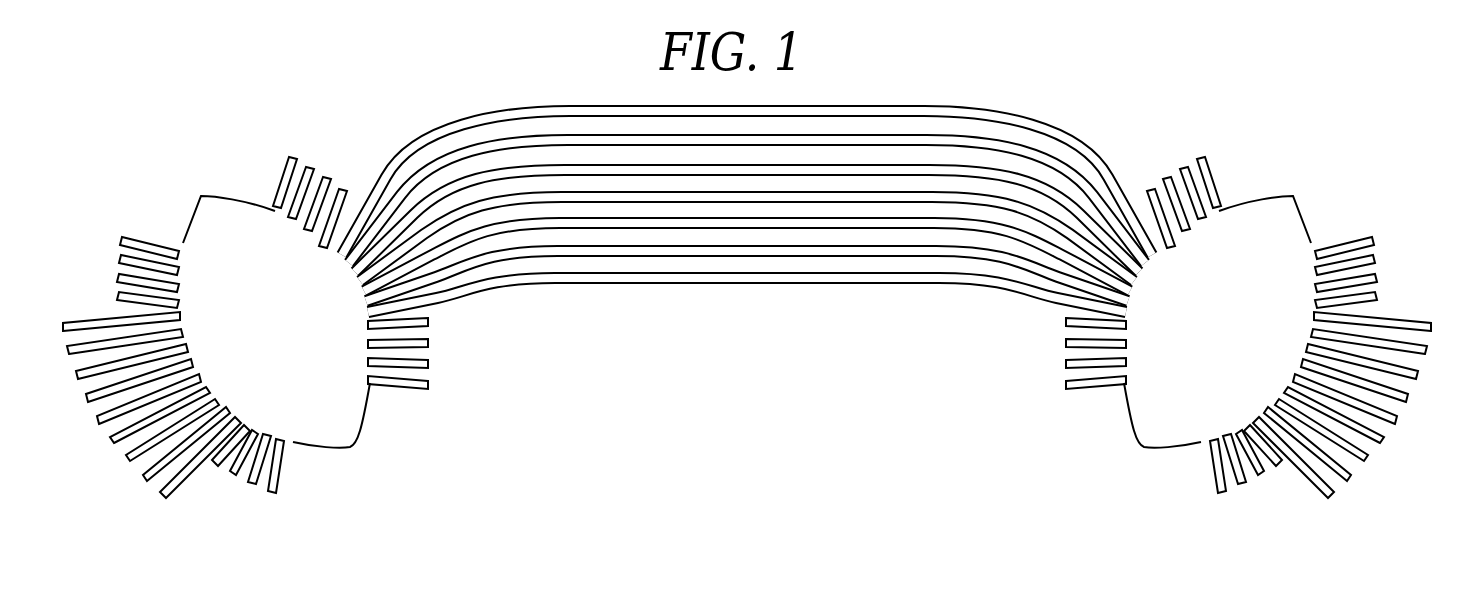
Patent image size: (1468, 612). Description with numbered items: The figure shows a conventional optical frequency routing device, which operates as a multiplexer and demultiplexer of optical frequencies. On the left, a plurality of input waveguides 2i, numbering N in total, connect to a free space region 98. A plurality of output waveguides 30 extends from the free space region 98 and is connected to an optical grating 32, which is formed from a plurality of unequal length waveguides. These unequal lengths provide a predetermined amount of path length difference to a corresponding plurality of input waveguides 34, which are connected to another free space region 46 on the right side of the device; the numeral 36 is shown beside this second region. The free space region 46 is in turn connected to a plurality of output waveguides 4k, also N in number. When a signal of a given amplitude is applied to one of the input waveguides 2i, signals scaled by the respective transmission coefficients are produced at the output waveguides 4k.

The free space region 98 is at (200, 194).
The output waveguides 30 is at (376, 178).
The optical grating 32 is at (747, 237).
The input waveguides 34 is at (1184, 163).
The second bond pad ring 36 is at (1293, 191).
The free space region 46 is at (1147, 446).
The input waveguides 2i is at (130, 462).
The output waveguides 4k is at (1416, 376).